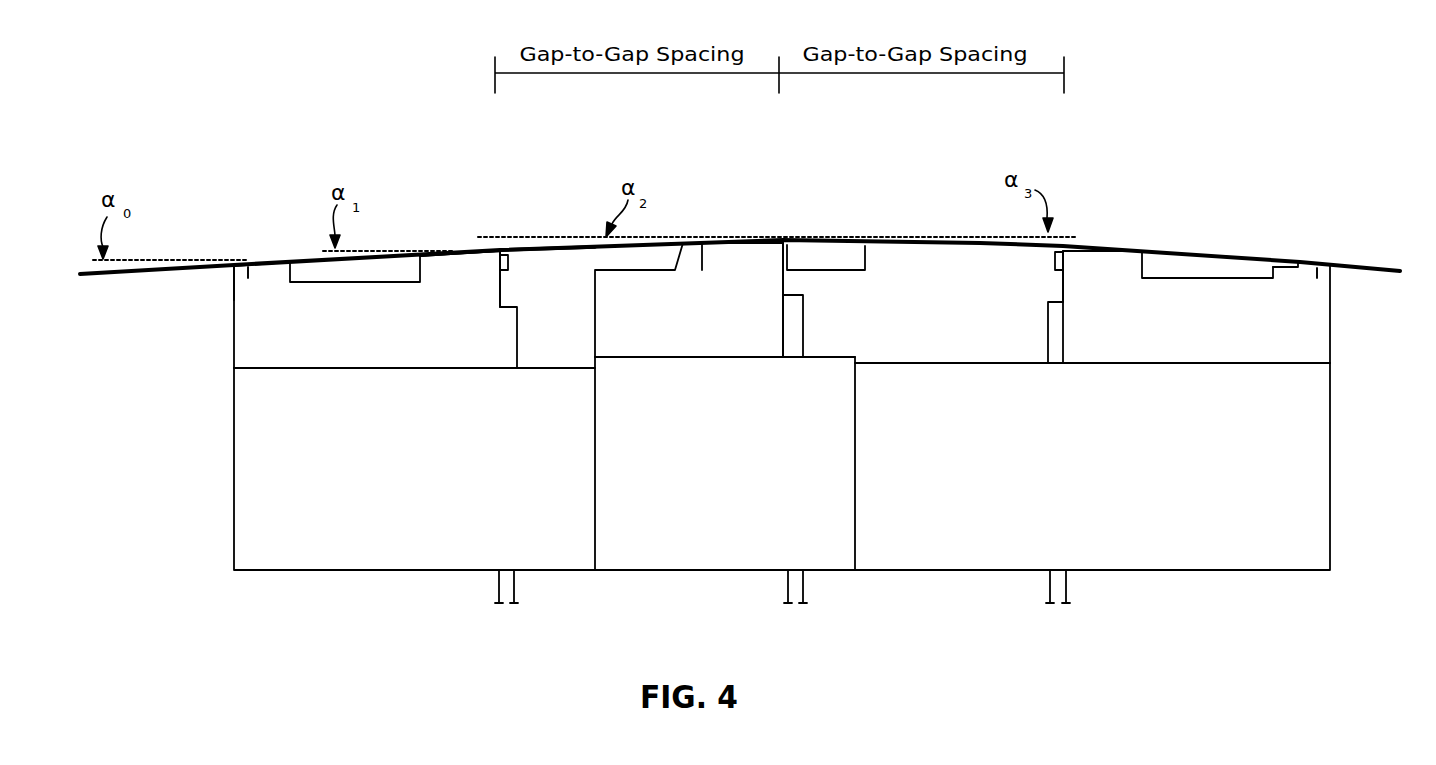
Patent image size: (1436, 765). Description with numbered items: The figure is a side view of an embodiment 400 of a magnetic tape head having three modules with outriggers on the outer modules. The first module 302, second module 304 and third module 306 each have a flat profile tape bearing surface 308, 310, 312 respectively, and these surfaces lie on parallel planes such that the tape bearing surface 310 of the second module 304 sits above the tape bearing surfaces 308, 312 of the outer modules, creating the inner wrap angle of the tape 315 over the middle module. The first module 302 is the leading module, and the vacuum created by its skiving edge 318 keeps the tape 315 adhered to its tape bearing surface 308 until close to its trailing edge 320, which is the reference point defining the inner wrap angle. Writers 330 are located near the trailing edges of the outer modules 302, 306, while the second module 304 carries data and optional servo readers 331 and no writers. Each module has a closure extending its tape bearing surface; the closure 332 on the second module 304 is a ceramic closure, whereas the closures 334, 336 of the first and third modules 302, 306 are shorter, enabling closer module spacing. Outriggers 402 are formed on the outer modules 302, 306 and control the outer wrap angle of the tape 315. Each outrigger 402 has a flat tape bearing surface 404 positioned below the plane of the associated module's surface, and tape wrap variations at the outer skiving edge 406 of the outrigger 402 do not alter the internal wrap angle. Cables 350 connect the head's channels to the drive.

The embodiment with outriggers 400 is at (396, 106).
The first module 302 is at (233, 333).
The second module 304 is at (684, 240).
The third module 306 is at (1332, 326).
The tape bearing surface of the first module 308 is at (470, 236).
The tape bearing surface of the second module 310 is at (730, 228).
The tape bearing surface of the third module 312 is at (1097, 233).
The tape 315 is at (1193, 252).
The skiving edge 318 is at (402, 267).
The trailing edge of the leading module 320 is at (546, 252).
The writers 330 is at (502, 234).
The data and servo readers 331 is at (788, 230).
The closure of the second module 332 is at (833, 271).
The closure of the first module 334 is at (512, 262).
The closure of the third module 336 is at (1055, 259).
The cables 350 is at (517, 588).
The outrigger 402 is at (286, 248).
The outrigger tape bearing surface 404 is at (263, 246).
The outer skiving edge of the outrigger 406 is at (219, 281).